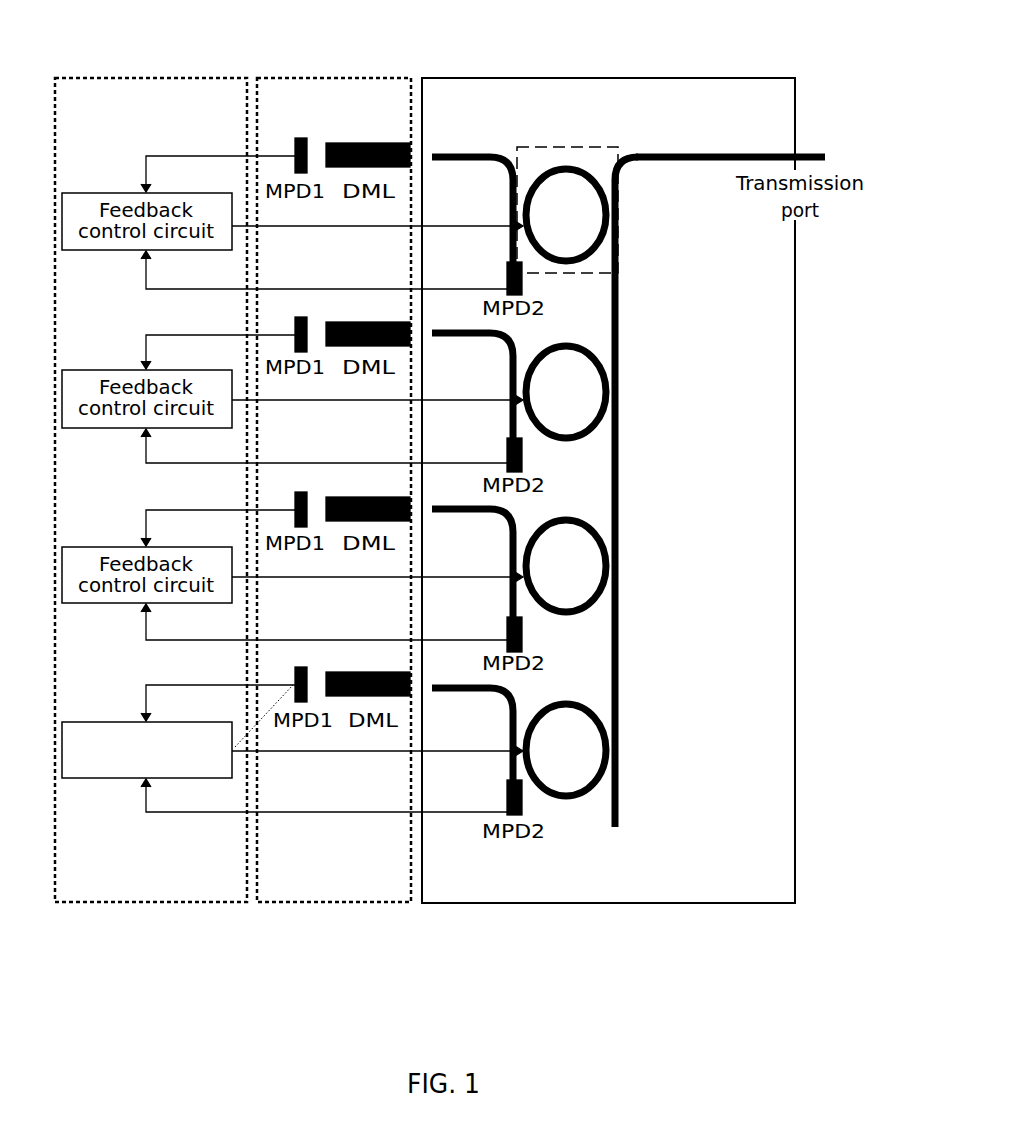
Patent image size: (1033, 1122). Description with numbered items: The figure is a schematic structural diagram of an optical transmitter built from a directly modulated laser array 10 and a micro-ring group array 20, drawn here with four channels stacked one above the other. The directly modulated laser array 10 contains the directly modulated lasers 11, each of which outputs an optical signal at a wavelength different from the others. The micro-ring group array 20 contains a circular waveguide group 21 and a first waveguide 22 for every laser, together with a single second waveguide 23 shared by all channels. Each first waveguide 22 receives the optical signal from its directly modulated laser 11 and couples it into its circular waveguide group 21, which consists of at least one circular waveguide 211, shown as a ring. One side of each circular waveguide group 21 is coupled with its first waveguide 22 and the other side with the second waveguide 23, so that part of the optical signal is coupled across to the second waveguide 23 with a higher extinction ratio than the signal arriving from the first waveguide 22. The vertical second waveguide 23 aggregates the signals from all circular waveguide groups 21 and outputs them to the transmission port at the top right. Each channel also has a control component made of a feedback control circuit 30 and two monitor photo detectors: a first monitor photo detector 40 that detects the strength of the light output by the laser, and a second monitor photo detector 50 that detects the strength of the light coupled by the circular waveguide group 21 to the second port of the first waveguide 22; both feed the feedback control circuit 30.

The directly modulated laser array 10 is at (330, 78).
The directly modulated laser 11 is at (337, 700).
The micro-ring group array 20 is at (608, 78).
The circular waveguide group 21 is at (530, 147).
The first waveguide 22 is at (517, 517).
The second waveguide 23 is at (712, 153).
The circular waveguide 211 is at (605, 243).
The feedback control circuit 30 is at (99, 192).
The first monitor photo detector 40 is at (207, 780).
The second monitor photo detector 50 is at (522, 792).